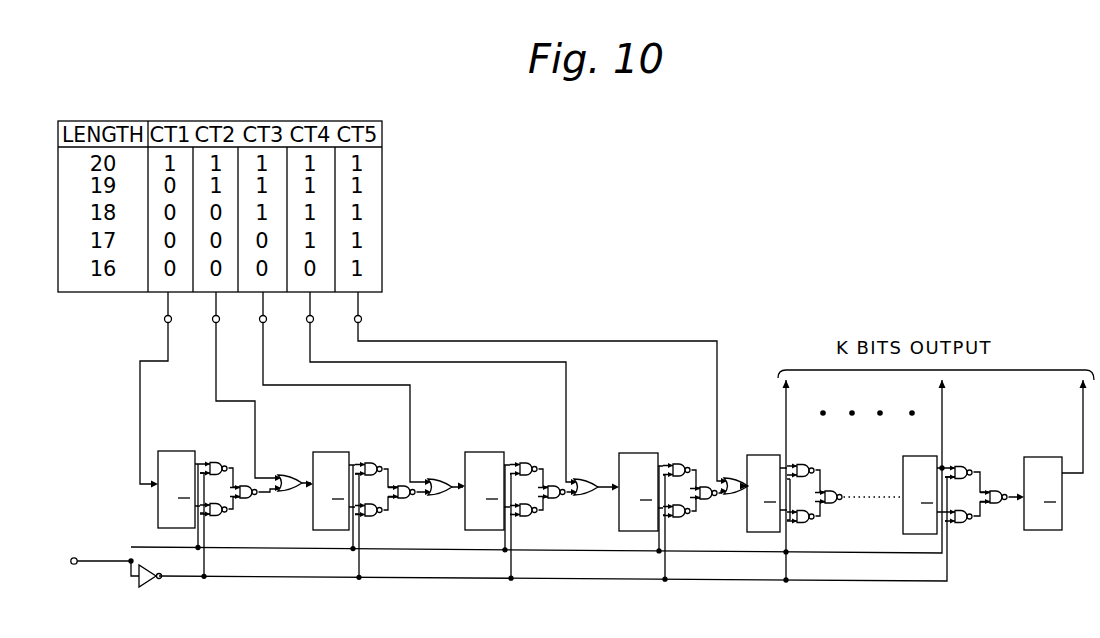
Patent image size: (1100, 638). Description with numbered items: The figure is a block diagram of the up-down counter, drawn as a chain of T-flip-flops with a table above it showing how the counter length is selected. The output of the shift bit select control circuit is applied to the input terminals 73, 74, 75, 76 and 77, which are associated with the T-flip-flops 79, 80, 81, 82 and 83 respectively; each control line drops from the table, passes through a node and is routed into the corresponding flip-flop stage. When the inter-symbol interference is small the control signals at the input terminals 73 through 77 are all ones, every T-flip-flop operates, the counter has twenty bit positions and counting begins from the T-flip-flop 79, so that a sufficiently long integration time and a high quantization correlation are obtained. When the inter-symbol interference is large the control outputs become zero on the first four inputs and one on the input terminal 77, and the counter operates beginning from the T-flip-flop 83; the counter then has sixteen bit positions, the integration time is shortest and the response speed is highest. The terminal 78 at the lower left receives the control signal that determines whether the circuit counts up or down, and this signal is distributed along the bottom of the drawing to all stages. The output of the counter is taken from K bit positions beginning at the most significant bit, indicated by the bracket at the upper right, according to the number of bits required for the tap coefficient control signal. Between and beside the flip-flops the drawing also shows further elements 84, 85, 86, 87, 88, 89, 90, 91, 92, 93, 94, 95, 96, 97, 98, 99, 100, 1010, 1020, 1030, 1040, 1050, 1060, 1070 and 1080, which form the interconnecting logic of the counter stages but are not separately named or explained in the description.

The input terminal 73 is at (154, 390).
The input terminal 74 is at (230, 385).
The input terminal 75 is at (328, 387).
The input terminal 76 is at (425, 387).
The input terminal 77 is at (524, 386).
The terminal 78 is at (80, 556).
The T-flip-flop 79 is at (170, 450).
The T-flip-flop 80 is at (320, 451).
The T-flip-flop 81 is at (487, 451).
The T-flip-flop 82 is at (640, 452).
The T-flip-flop 83 is at (776, 454).
The T flip-flop 84 is at (916, 456).
The T flip-flop 85 is at (1043, 457).
The inverter 86 is at (150, 588).
The NAND gate 87 is at (213, 461).
The NAND gate 88 is at (226, 516).
The NAND gate 89 is at (255, 498).
The NAND gate 90 is at (372, 462).
The NAND gate 91 is at (380, 517).
The NAND gate 92 is at (412, 497).
The NAND gate 93 is at (530, 462).
The NAND gate 94 is at (535, 517).
The NAND gate 95 is at (565, 497).
The NAND gate 96 is at (680, 463).
The NAND gate 97 is at (686, 518).
The NAND gate 98 is at (711, 498).
The NAND gate 99 is at (803, 464).
The NAND gate 100 is at (812, 522).
The NAND gate 1010 is at (846, 500).
The NAND gate 1020 is at (963, 466).
The NAND gate 1030 is at (966, 524).
The NAND gate 1040 is at (999, 503).
The OR gate 1050 is at (281, 474).
The OR gate 1060 is at (436, 478).
The OR gate 1070 is at (585, 478).
The OR gate 1080 is at (733, 477).